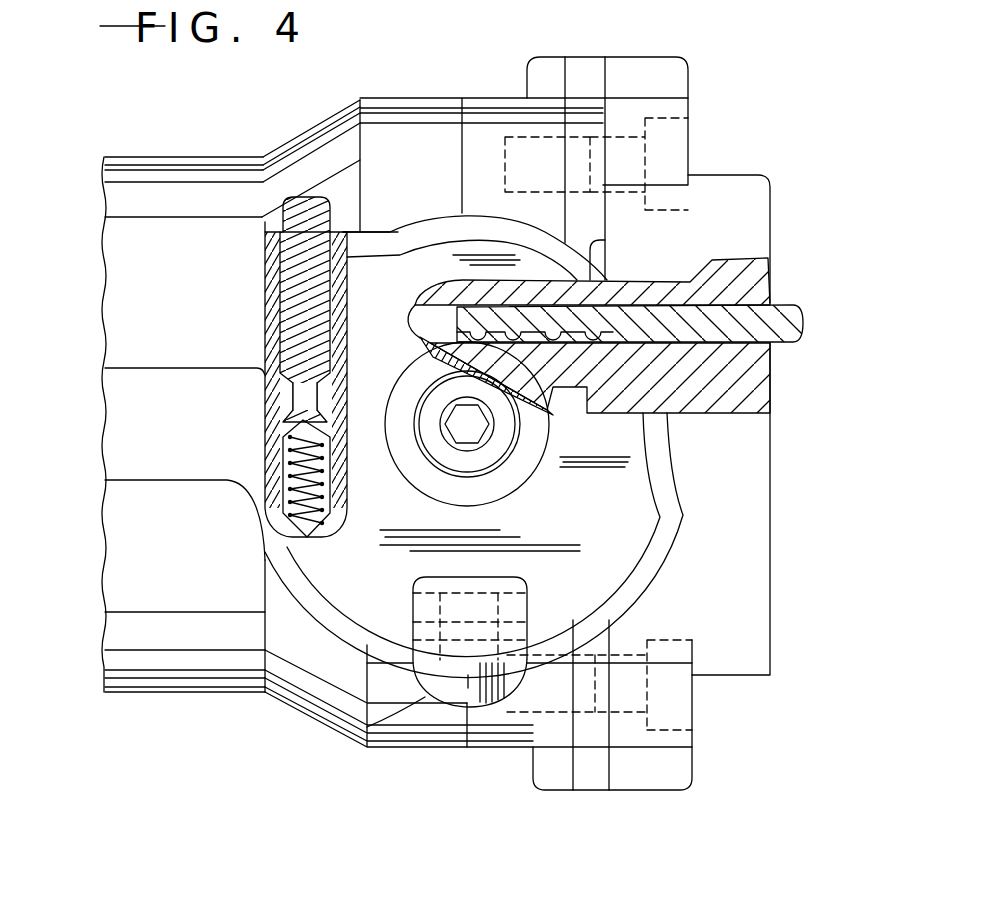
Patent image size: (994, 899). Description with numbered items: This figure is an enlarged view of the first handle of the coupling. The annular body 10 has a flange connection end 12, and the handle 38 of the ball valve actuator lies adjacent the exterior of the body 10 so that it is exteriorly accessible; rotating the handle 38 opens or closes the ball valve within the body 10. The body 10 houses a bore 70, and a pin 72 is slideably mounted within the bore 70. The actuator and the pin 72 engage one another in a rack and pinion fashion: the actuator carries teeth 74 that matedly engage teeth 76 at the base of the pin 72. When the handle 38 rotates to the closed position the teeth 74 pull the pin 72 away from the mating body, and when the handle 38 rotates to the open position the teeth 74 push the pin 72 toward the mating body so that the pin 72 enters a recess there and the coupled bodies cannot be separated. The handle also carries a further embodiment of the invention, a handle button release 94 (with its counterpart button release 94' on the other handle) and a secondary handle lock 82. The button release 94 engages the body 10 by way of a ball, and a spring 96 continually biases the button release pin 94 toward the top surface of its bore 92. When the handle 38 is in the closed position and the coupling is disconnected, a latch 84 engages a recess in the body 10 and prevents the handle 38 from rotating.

The annular body 10 is at (303, 693).
The flange connection end 12 is at (775, 205).
The handle 38 is at (123, 398).
The bore 70 is at (408, 308).
The pin 72 is at (793, 303).
The teeth 74 is at (560, 410).
The teeth 76 is at (592, 248).
The secondary handle lock 82 is at (332, 740).
The latch 84 is at (467, 693).
The bore 92 is at (265, 308).
The handle button release 94 is at (293, 249).
The handle button release 94' is at (592, 140).
The spring 96 is at (290, 480).